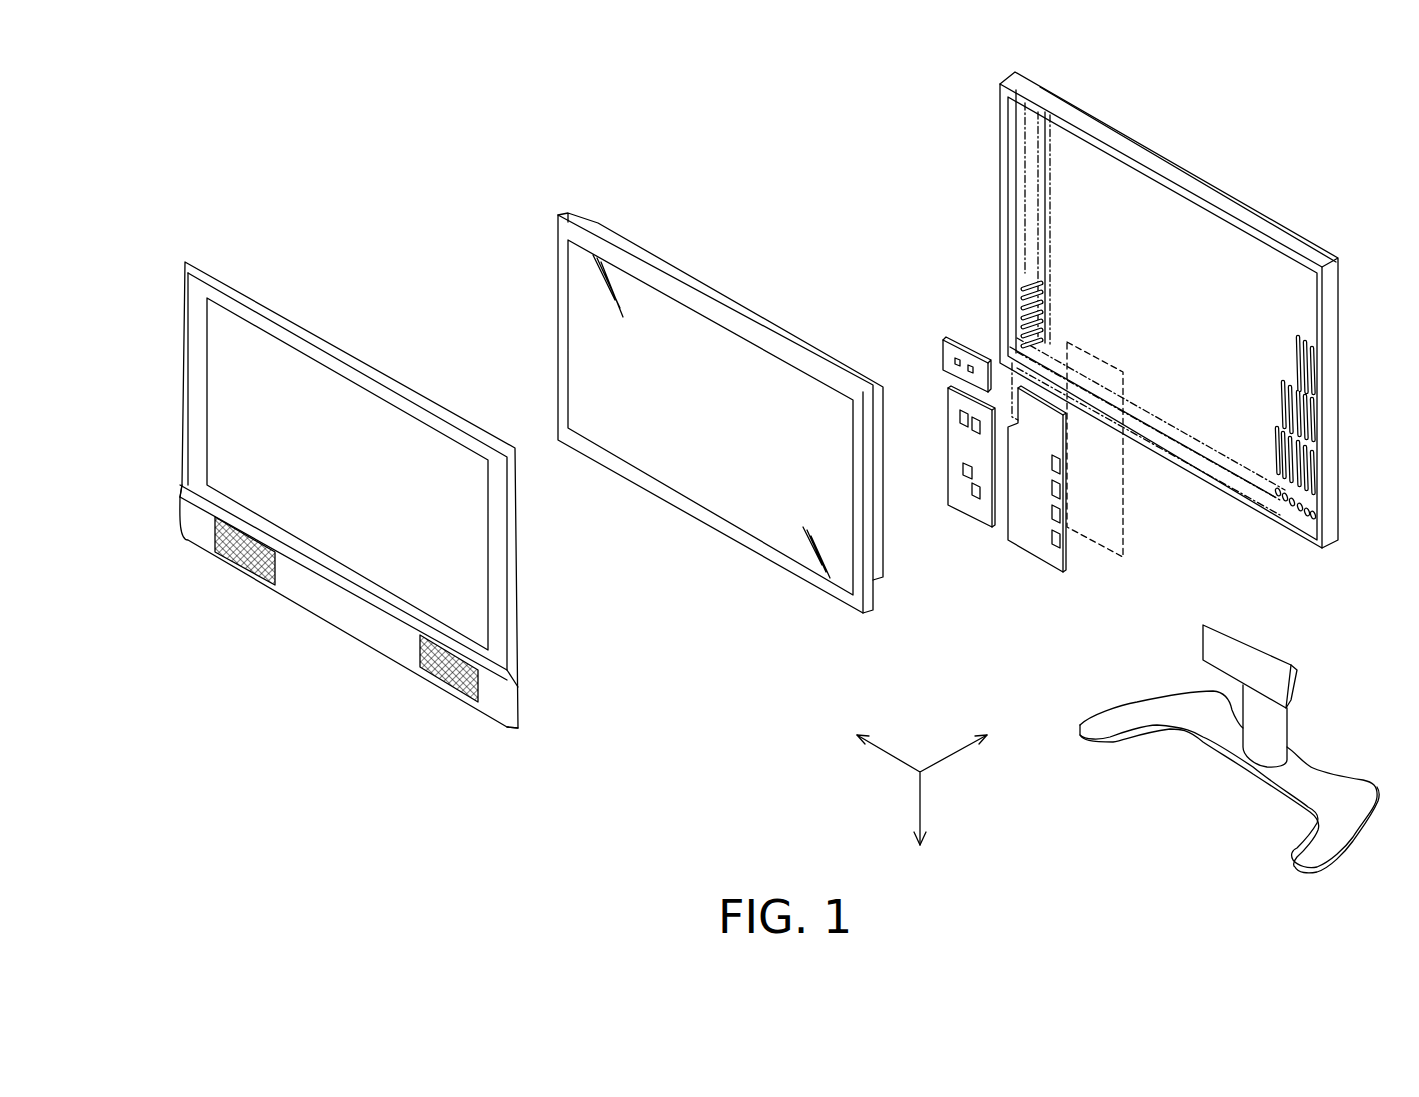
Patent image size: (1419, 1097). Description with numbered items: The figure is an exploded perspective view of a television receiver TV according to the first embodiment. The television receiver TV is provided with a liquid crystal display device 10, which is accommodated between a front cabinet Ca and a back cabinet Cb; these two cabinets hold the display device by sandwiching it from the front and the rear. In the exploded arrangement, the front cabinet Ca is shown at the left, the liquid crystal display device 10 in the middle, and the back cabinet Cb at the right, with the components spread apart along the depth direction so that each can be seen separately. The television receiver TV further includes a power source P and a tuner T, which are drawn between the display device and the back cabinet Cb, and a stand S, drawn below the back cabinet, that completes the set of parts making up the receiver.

The television receiver TV is at (742, 153).
The front cabinet Ca is at (332, 343).
The liquid crystal display device 10 is at (663, 263).
The back cabinet Cb is at (1158, 157).
The tuner T is at (963, 512).
The power source P is at (1030, 550).
The stand S is at (1142, 733).